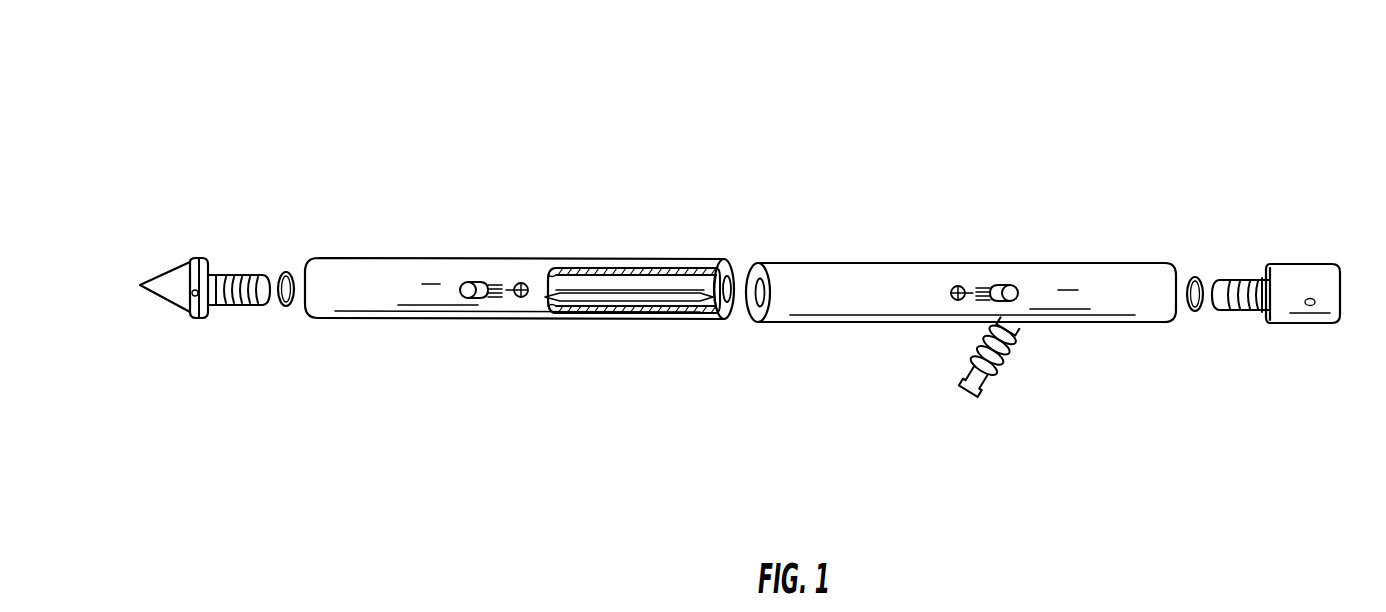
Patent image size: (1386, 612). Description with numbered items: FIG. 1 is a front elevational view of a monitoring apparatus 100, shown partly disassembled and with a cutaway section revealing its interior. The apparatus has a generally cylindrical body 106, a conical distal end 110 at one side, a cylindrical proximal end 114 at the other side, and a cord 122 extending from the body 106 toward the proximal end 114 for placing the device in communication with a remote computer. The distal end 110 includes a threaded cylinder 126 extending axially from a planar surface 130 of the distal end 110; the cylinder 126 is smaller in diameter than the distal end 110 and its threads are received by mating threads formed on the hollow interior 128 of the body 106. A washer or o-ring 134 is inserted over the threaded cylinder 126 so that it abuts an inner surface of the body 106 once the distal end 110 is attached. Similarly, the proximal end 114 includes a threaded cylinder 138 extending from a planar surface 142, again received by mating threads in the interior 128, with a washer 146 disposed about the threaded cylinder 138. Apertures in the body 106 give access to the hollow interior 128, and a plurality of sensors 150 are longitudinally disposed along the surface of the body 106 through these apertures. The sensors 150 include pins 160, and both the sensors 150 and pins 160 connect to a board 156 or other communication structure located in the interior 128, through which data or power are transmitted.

The monitoring apparatus 100 is at (798, 100).
The cylindrical body 106 is at (1065, 264).
The conical distal end 110 is at (160, 300).
The cylindrical proximal end 114 is at (1305, 264).
The cord 122 is at (975, 398).
The threaded cylinder 126 is at (258, 257).
The hollow interior 128 is at (740, 305).
The planar surface 130 is at (230, 257).
The washer or o-ring 134 is at (282, 313).
The threaded cylinder 138 is at (1228, 282).
The planar surface 142 is at (1265, 328).
The washer 146 is at (1196, 313).
The sensors 150 is at (462, 282).
The board 156 is at (650, 270).
The pins 160 is at (497, 280).